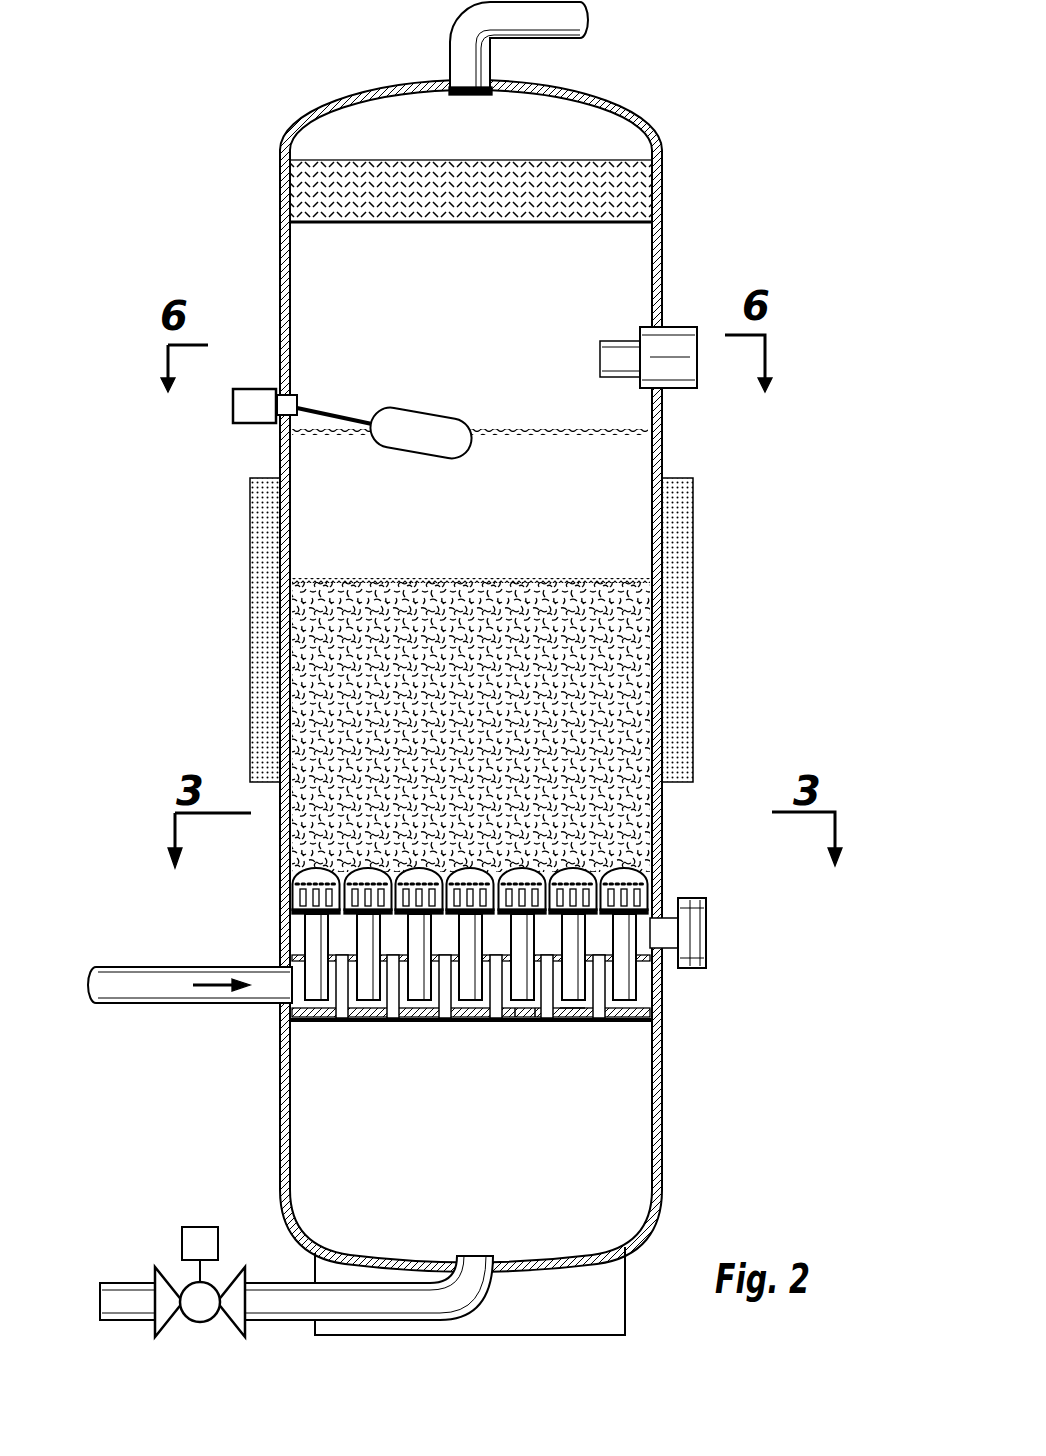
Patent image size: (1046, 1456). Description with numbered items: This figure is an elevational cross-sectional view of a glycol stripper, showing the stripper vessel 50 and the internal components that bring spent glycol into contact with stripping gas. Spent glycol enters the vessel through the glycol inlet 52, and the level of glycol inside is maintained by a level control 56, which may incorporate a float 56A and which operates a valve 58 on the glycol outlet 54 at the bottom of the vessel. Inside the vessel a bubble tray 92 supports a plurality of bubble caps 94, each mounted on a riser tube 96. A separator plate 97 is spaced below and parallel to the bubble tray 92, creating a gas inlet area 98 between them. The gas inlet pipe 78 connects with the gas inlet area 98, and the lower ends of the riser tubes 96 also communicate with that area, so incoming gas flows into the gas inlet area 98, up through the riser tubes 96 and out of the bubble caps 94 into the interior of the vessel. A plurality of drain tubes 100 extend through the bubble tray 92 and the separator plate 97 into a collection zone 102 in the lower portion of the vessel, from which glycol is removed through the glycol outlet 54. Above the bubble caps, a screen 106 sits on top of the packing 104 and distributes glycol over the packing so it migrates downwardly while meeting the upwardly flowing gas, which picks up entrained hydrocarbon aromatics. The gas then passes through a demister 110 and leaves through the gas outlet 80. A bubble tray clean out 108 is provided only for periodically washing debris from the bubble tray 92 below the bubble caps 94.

The stripper vessel 50 is at (283, 250).
The glycol inlet 52 is at (675, 337).
The glycol outlet 54 is at (463, 1282).
The level control 56 is at (250, 408).
The float 56A is at (397, 420).
The valve 58 is at (195, 1295).
The gas inlet pipe 78 is at (135, 998).
The gas outlet 80 is at (470, 40).
The bubble tray 92 is at (660, 1003).
The bubble caps 94 is at (630, 878).
The riser tube 96 is at (647, 912).
The separator plate 97 is at (572, 1022).
The gas inlet area 98 is at (300, 1018).
The drain tubes 100 is at (540, 1022).
The collection zone 102 is at (480, 1168).
The packing 104 is at (617, 682).
The screen 106 is at (623, 578).
The bubble tray clean out 108 is at (664, 927).
The demister 110 is at (495, 183).